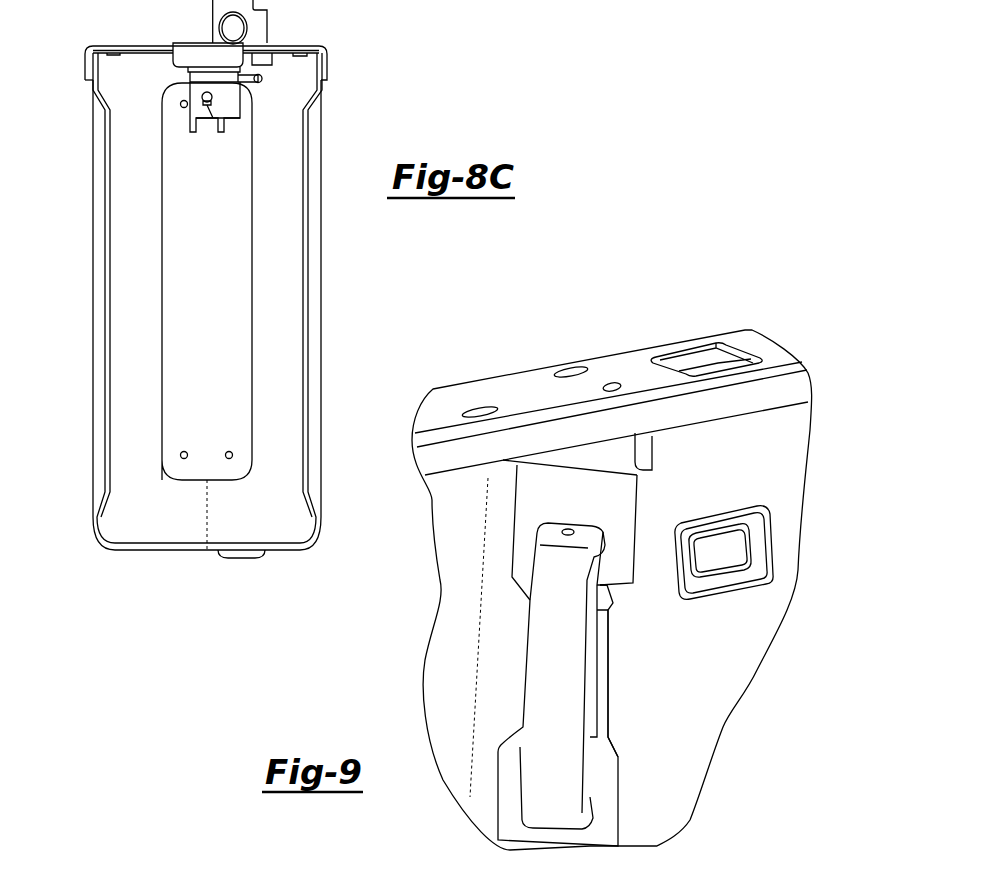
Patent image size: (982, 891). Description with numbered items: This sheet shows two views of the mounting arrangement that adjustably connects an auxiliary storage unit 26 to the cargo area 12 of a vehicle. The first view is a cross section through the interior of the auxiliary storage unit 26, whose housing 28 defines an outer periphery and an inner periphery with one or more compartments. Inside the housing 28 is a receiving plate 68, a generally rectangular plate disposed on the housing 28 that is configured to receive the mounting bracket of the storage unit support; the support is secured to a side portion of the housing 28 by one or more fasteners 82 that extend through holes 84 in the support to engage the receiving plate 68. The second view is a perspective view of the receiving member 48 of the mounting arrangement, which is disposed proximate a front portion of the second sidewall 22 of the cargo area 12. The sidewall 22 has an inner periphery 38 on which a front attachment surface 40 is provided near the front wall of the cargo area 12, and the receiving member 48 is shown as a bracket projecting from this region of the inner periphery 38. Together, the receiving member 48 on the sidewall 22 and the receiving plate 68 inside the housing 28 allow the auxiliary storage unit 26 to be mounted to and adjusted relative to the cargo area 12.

In FIG. 9, the cargo area 12 is at (611, 554).
In FIG. 9, the second sidewall 22 is at (765, 338).
In FIG. 8C, the auxiliary storage unit 26 is at (329, 44).
In FIG. 8C, the housing 28 is at (277, 257).
In FIG. 9, the inner periphery 38 is at (762, 463).
In FIG. 9, the front attachment surface 40 is at (503, 393).
In FIG. 9, the receiving member 48 is at (556, 650).
In FIG. 8C, the receiving plate 68 is at (180, 200).
In FIG. 8C, the fasteners 82 is at (180, 104).
In FIG. 8C, the holes 84 is at (180, 455).